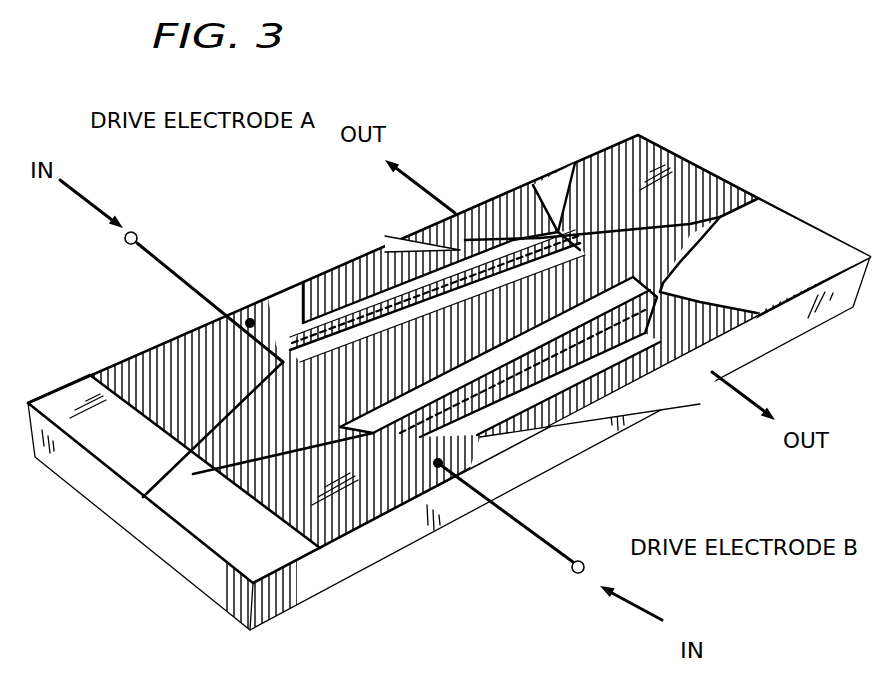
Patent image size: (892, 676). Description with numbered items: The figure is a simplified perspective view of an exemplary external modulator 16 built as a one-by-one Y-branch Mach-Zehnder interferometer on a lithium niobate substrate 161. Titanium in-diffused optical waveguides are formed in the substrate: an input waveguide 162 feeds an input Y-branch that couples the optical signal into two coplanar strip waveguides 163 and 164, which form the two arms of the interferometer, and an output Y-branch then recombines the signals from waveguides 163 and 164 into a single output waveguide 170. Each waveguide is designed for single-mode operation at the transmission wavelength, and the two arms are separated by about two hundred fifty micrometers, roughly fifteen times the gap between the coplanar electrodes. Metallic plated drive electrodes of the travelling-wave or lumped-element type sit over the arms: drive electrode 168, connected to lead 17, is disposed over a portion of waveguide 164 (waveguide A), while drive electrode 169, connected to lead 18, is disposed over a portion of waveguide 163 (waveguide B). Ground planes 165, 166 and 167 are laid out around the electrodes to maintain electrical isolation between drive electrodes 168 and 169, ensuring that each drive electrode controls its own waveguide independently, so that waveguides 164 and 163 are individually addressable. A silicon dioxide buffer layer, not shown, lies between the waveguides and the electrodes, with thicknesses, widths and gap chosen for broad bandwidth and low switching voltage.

The external modulator 16 is at (380, 654).
The lead 17 is at (150, 258).
The lead 18 is at (547, 547).
The lithium niobate substrate 161 is at (43, 452).
The waveguide 162 is at (163, 490).
The waveguide 163 is at (207, 480).
The waveguide 164 is at (190, 466).
The ground plane 165 is at (352, 265).
The ground plane 166 is at (545, 415).
The ground plane 167 is at (560, 170).
The drive electrode 168 is at (490, 205).
The drive electrode 169 is at (678, 365).
The waveguide 170 is at (735, 210).